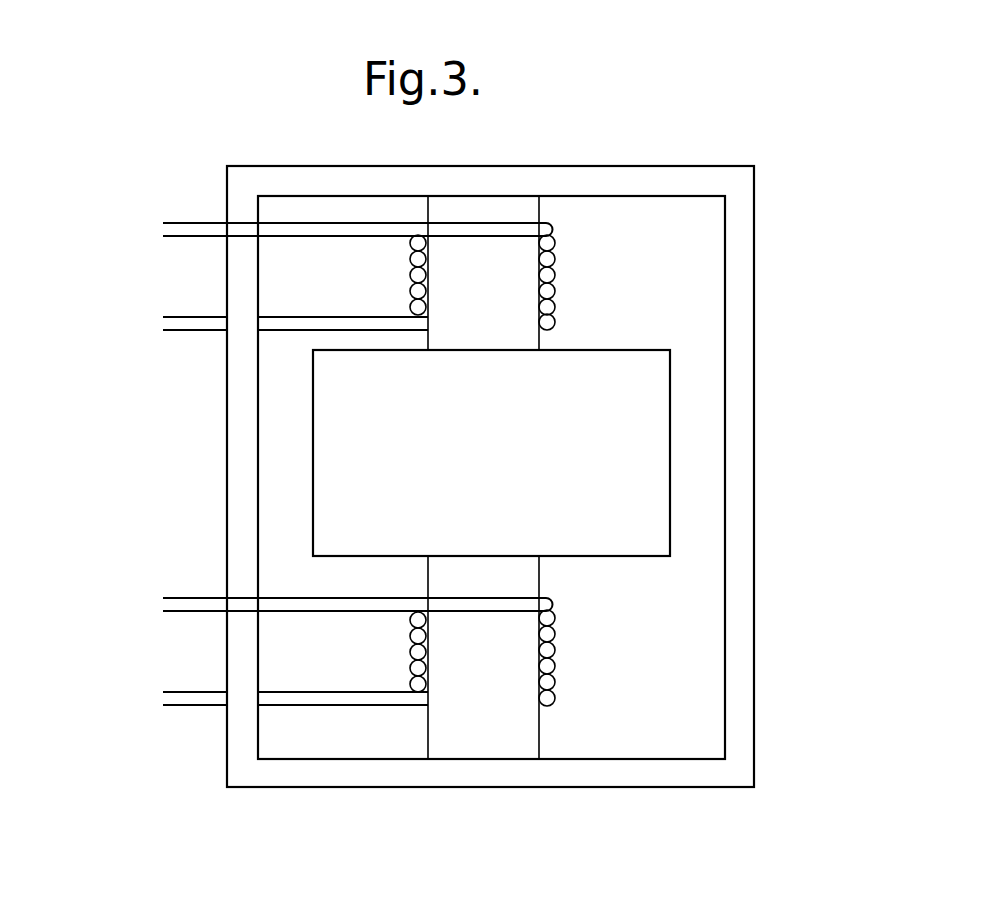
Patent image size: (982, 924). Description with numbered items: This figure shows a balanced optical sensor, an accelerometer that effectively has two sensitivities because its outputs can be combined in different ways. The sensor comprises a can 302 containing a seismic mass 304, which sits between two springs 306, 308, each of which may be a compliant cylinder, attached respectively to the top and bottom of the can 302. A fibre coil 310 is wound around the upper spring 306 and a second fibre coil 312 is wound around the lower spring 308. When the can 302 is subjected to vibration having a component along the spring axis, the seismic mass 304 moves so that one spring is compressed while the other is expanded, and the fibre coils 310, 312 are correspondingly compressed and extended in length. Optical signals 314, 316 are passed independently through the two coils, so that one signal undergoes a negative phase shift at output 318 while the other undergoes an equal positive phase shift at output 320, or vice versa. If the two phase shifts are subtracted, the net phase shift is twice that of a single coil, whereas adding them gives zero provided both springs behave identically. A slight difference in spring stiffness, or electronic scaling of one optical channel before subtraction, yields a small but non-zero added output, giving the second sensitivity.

The can 302 is at (680, 777).
The seismic mass 304 is at (645, 457).
The spring 306 is at (488, 257).
The spring 308 is at (483, 730).
The fibre coil 310 is at (549, 290).
The fibre coil 312 is at (549, 650).
The optical signal 314 is at (146, 231).
The optical signal 316 is at (146, 604).
The output 318 is at (152, 326).
The output 320 is at (152, 699).